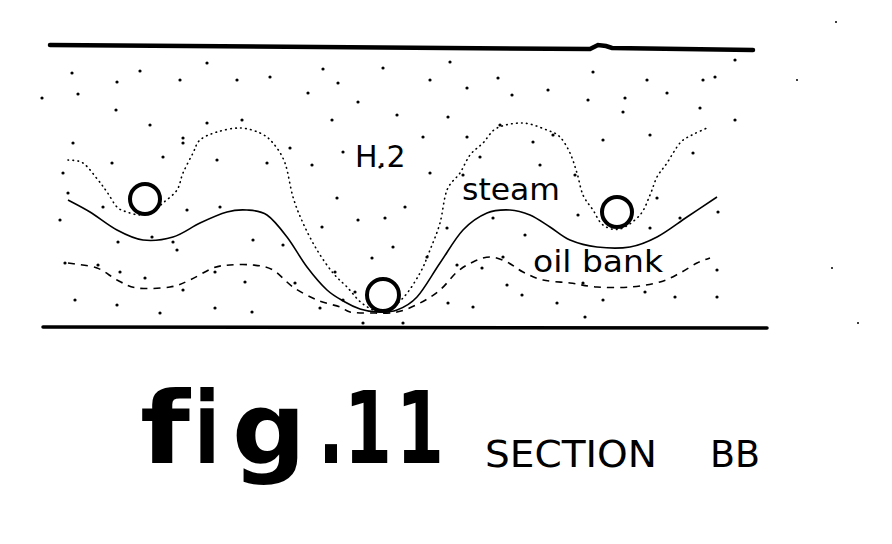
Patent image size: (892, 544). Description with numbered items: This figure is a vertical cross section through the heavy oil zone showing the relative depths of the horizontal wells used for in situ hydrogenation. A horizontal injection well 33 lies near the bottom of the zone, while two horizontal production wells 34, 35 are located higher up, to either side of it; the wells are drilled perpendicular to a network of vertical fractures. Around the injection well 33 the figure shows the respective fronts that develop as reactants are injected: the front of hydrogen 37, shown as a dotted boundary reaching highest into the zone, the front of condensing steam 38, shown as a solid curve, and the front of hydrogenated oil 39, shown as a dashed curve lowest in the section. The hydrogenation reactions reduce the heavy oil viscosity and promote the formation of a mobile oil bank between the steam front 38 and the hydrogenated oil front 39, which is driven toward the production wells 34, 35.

The horizontal injection well 33 is at (381, 312).
The horizontal production well 34 is at (629, 198).
The horizontal production well 35 is at (156, 187).
The hydrogen front 37 is at (252, 132).
The condensing steam front 38 is at (198, 222).
The hydrogenated oil front 39 is at (197, 277).